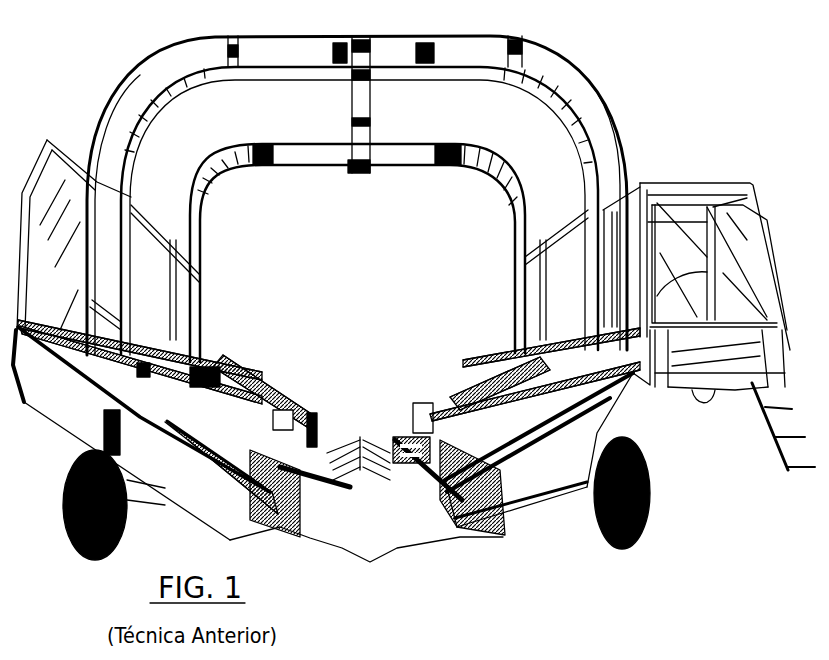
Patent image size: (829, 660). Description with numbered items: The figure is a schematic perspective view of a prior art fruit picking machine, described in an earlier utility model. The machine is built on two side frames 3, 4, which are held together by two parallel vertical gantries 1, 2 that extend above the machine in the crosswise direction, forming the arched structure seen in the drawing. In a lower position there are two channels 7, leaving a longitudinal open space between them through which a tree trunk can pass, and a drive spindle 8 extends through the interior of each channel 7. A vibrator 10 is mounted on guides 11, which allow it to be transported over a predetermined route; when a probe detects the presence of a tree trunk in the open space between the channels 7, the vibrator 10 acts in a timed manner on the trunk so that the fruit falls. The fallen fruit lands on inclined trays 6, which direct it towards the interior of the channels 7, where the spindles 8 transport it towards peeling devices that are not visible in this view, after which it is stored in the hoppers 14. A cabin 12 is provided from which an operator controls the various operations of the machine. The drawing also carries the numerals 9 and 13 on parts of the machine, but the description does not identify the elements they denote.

The vertical gantry 1 is at (596, 107).
The vertical gantry 2 is at (458, 153).
The side frame 3 is at (53, 403).
The side frame 4 is at (530, 487).
The inclined tray 6 is at (222, 345).
The channel 7 is at (365, 560).
The drive spindle 8 is at (305, 447).
The central collecting element 9 is at (360, 440).
The vibrator 10 is at (416, 437).
The guide 11 is at (585, 425).
The cabin 12 is at (707, 190).
The left cabin panel 13 is at (70, 150).
The hopper 14 is at (222, 408).